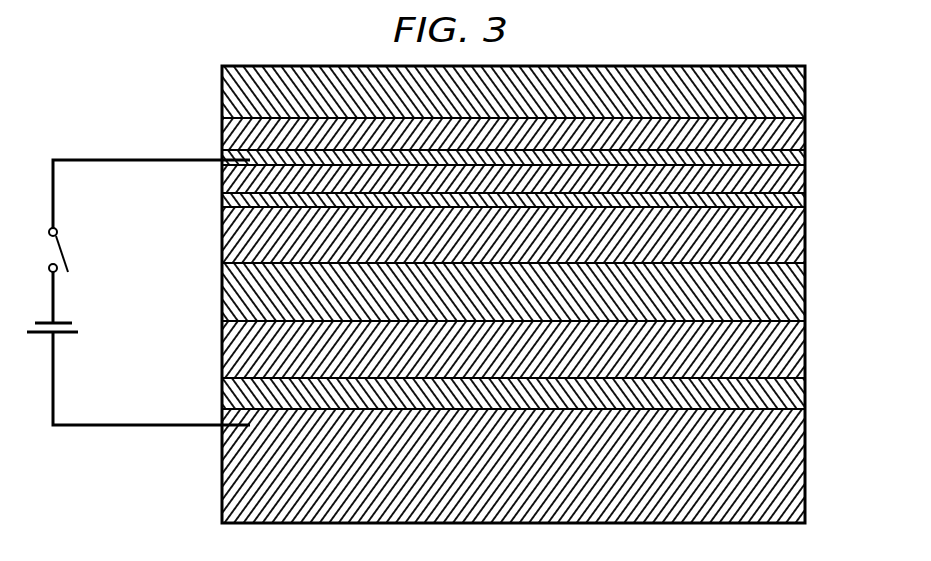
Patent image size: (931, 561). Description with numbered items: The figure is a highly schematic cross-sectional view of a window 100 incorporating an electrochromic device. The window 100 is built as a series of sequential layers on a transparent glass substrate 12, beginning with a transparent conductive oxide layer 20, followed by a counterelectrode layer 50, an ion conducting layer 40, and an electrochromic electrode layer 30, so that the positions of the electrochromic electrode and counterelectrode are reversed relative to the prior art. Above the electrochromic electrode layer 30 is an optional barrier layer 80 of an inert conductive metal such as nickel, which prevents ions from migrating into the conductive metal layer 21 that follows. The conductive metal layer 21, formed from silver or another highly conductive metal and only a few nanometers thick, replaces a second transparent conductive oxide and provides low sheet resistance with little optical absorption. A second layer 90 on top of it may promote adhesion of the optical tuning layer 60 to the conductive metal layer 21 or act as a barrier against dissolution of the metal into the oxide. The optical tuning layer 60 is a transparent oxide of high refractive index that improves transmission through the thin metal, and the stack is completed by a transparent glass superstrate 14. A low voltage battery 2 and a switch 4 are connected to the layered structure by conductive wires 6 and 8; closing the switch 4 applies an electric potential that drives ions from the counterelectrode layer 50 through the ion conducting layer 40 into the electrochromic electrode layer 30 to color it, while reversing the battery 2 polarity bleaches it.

The window 100 is at (166, 520).
The transparent glass substrate 12 is at (800, 442).
The transparent conductive oxide layer 20 is at (800, 395).
The counterelectrode layer 50 is at (792, 350).
The ion conducting layer 40 is at (790, 290).
The electrochromic electrode layer 30 is at (805, 223).
The barrier layer 80 is at (805, 200).
The conductive metal layer 21 is at (805, 173).
The second layer 90 is at (805, 152).
The optical tuning layer 60 is at (805, 128).
The transparent glass superstrate 14 is at (805, 93).
The conductive wire 8 is at (100, 160).
The conductive wire 6 is at (120, 425).
The switch 4 is at (62, 256).
The low voltage battery 2 is at (33, 334).